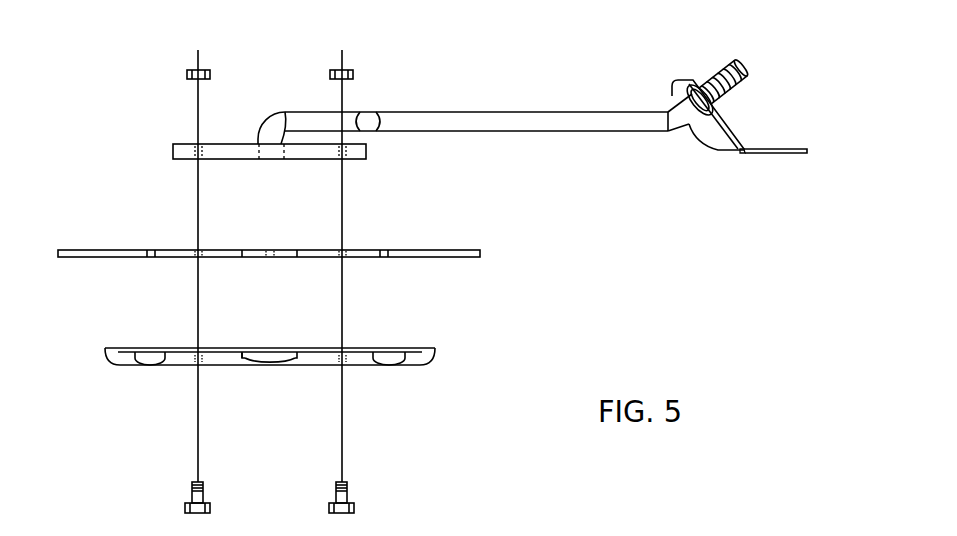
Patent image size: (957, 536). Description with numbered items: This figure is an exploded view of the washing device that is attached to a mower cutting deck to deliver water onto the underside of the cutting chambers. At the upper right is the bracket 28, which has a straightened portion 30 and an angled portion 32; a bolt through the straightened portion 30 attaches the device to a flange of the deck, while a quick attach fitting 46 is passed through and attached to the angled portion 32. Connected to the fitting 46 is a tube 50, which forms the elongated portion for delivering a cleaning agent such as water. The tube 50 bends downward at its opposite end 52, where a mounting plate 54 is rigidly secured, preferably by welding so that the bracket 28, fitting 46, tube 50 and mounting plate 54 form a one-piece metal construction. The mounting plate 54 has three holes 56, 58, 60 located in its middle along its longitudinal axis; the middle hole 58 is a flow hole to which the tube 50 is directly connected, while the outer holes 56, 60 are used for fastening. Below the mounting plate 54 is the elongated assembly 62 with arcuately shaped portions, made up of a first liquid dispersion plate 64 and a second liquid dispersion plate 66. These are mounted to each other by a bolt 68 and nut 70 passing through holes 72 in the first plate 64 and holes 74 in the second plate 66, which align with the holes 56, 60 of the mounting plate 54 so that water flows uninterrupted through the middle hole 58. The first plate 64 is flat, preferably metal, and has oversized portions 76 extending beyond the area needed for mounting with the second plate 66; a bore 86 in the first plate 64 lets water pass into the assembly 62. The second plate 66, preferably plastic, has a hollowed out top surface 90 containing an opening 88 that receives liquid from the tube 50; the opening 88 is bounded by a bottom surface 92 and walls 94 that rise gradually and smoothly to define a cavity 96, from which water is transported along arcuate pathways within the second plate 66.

The bracket 28 is at (742, 153).
The straightened portion 30 is at (783, 154).
The angled portion 32 is at (715, 135).
The quick attach fitting 46 is at (727, 70).
The tube 50 is at (545, 112).
The opposite end 52 is at (277, 112).
The mounting plate 54 is at (367, 153).
The hole 56 is at (192, 166).
The middle hole 58 is at (273, 162).
The hole 60 is at (347, 162).
The elongated assembly 62 is at (87, 181).
The first liquid dispersion plate 64 is at (112, 235).
The second liquid dispersion plate 66 is at (134, 343).
The bolt 68 is at (188, 498).
The nut 70 is at (188, 72).
The holes 72 is at (192, 262).
The holes 74 is at (193, 372).
The oversized portions 76 is at (460, 254).
The bore 86 is at (270, 252).
The opening 88 is at (260, 347).
The top surface 90 is at (363, 345).
The bottom surface 92 is at (277, 365).
The walls 94 is at (253, 360).
The cavity 96 is at (282, 347).